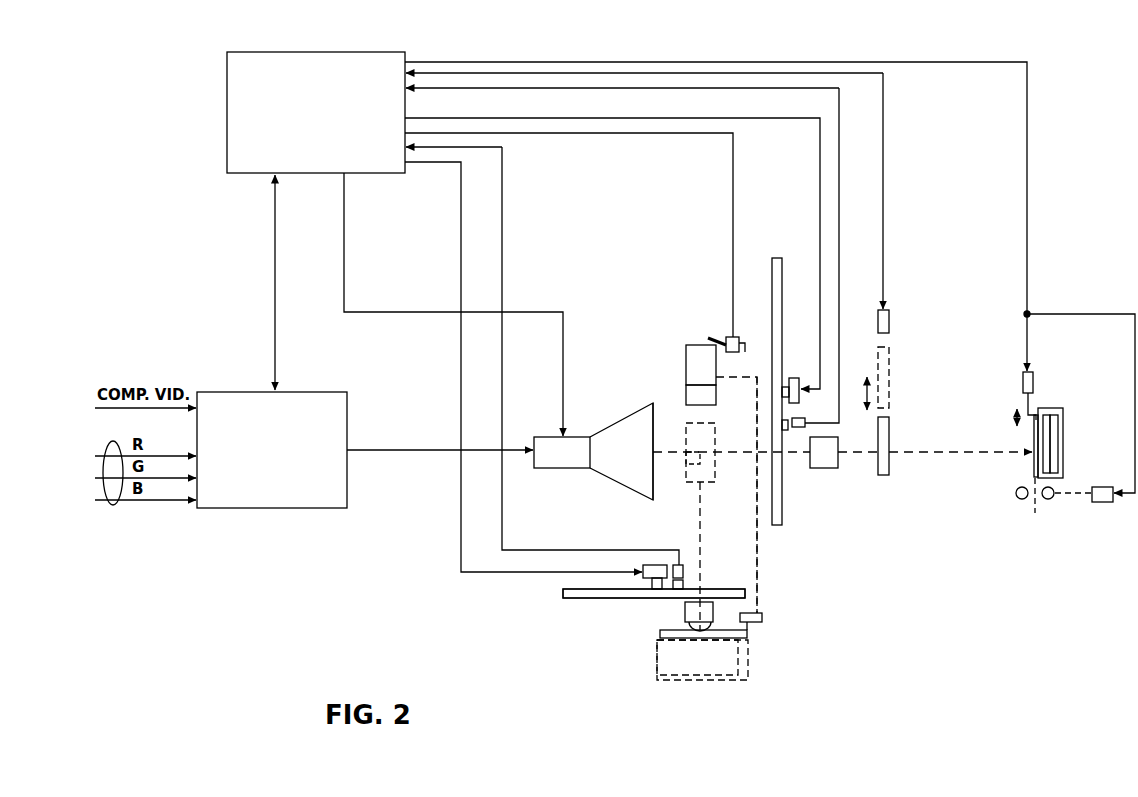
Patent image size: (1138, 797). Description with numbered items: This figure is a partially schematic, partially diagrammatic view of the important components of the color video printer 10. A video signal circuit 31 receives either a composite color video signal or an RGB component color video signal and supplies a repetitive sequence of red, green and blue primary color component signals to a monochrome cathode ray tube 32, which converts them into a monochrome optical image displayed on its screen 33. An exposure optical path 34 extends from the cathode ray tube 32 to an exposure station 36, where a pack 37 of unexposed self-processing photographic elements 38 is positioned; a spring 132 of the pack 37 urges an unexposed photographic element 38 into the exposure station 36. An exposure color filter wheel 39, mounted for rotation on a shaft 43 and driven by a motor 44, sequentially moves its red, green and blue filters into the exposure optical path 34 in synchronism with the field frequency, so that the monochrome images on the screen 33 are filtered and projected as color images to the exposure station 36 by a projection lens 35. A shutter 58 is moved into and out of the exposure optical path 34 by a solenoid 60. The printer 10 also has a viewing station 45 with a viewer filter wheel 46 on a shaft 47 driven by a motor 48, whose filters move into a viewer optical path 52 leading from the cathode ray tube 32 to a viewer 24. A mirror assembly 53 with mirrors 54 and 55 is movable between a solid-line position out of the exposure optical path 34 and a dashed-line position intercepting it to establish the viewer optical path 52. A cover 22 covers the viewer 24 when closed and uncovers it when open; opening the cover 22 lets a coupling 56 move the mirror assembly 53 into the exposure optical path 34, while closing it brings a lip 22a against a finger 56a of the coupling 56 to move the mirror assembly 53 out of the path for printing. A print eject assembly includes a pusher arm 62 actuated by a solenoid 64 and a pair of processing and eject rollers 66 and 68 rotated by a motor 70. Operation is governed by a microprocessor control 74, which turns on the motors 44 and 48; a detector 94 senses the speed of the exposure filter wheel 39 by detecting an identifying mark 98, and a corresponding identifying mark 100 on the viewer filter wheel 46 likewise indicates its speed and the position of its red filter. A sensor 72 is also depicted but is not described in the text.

The printer 10 is at (1019, 666).
The cover 22 is at (700, 640).
The lip 22a is at (748, 665).
The viewer 24 is at (685, 612).
The video signal circuit 31 is at (315, 392).
The cathode ray tube 32 is at (602, 479).
The screen 33 is at (656, 480).
The exposure optical path 34 is at (947, 452).
The projection lens 35 is at (824, 468).
The exposure station 36 is at (684, 570).
The pack 37 is at (1056, 408).
The photographic element 38 is at (1033, 462).
The exposure color filter wheel 39 is at (781, 262).
The shaft 43 is at (786, 387).
The motor 44 is at (804, 381).
The viewing station 45 is at (640, 631).
The viewer filter wheel 46 is at (571, 601).
The shaft 47 is at (640, 591).
The motor 48 is at (655, 565).
The viewer optical path 52 is at (700, 525).
The mirror assembly 53 is at (679, 349).
The mirror 54 is at (686, 392).
The mirror 55 is at (686, 358).
The coupling 56 is at (760, 556).
The finger 56a is at (762, 620).
The shutter 58 is at (884, 477).
The solenoid 60 is at (890, 320).
The pusher arm 62 is at (1025, 398).
The solenoid 64 is at (1034, 385).
The processing and eject roller 66 is at (1020, 500).
The processing and eject roller 68 is at (1052, 500).
The motor 70 is at (1105, 502).
The light sensor 72 is at (736, 357).
The microprocessor control 74 is at (355, 52).
The detector 94 is at (806, 420).
The identifying mark 98 is at (794, 437).
The identifying mark 100 is at (685, 590).
The spring 132 is at (1057, 448).